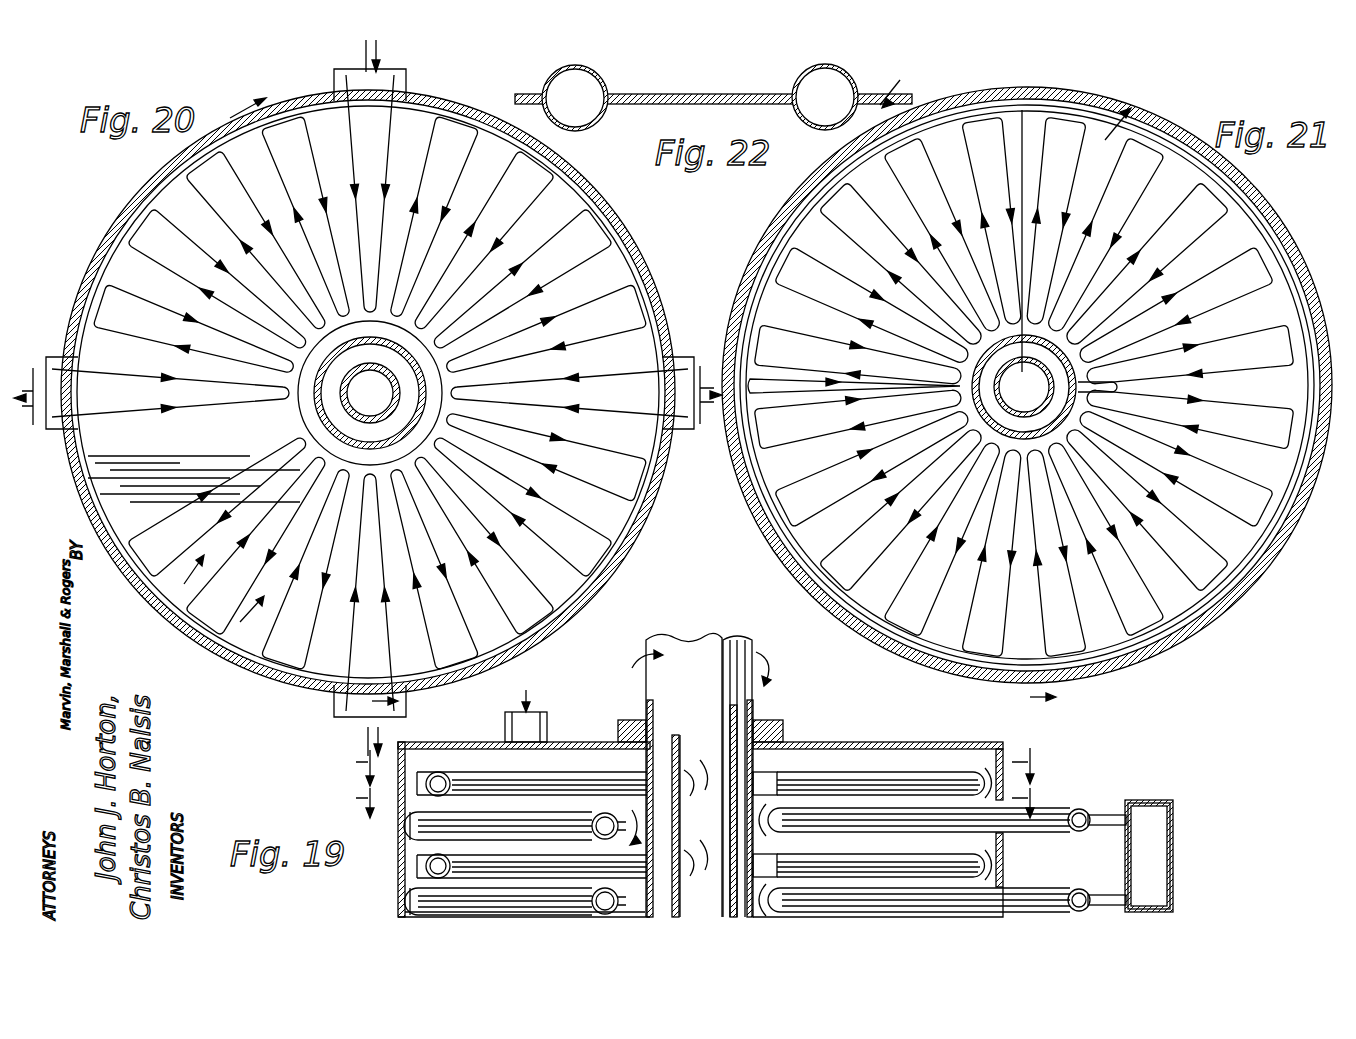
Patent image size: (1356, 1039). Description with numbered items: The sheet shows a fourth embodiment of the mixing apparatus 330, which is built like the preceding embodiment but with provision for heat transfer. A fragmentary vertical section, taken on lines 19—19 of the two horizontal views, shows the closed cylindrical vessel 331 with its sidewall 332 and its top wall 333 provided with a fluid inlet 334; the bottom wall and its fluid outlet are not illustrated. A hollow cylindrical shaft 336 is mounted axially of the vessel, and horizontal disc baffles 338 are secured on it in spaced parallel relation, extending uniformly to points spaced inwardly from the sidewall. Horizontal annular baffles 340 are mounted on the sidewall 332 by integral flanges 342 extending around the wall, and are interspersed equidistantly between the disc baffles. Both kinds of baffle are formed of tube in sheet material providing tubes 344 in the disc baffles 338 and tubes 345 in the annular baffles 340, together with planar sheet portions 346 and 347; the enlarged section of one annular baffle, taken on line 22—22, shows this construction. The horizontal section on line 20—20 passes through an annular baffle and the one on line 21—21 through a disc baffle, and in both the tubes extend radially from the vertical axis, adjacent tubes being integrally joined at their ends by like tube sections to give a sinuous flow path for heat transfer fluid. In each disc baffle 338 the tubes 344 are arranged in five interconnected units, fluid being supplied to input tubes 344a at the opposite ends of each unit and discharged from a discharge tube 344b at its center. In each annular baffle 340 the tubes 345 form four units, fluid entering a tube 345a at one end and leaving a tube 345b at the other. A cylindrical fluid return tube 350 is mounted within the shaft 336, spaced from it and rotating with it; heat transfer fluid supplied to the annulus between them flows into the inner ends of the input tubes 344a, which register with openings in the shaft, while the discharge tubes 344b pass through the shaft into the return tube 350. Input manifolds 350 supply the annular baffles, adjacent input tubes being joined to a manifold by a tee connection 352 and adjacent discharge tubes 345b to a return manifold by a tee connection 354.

In FIG. 20, the section line 19— 19 is at (314, 402).
In FIG. 22, the section line 19— 19 is at (879, 106).
In FIG. 21, the section line 19— 19 is at (1076, 408).
In FIG. 19, the section line 20— 20 is at (701, 803).
In FIG. 19, the section line 21— 21 is at (701, 767).
In FIG. 20, the section line 22— 22 is at (231, 578).
In FIG. 21, the mixing apparatus 330 is at (1238, 600).
In FIG. 19, the mixing apparatus 330 is at (1188, 826).
In FIG. 19, the closed cylindrical vessel 331 is at (400, 913).
In FIG. 20, the sidewall 332 is at (633, 534).
In FIG. 21, the sidewall 332 is at (772, 548).
In FIG. 19, the sidewall 332 is at (404, 880).
In FIG. 19, the top wall 333 is at (802, 742).
In FIG. 19, the fluid inlet 334 is at (546, 720).
In FIG. 20, the hollow cylindrical shaft 336 is at (418, 410).
In FIG. 21, the hollow cylindrical shaft 336 is at (995, 387).
In FIG. 19, the hollow cylindrical shaft 336 is at (757, 692).
In FIG. 21, the horizontal disc baffles 338 is at (1255, 216).
In FIG. 19, the horizontal disc baffles 338 is at (814, 778).
In FIG. 20, the horizontal annular baffles 340 is at (600, 189).
In FIG. 19, the horizontal annular baffles 340 is at (846, 822).
In FIG. 19, the integral flanges 342 is at (446, 900).
In FIG. 21, the tubes of disc baffles 344 is at (1102, 190).
In FIG. 19, the tubes of disc baffles 344 is at (580, 779).
In FIG. 21, the input tubes 344a is at (1120, 272).
In FIG. 19, the input tubes 344a is at (699, 848).
In FIG. 21, the discharge tube 344b is at (1115, 376).
In FIG. 19, the discharge tube 344b is at (699, 770).
In FIG. 20, the tubes of annular baffles 345 is at (306, 176).
In FIG. 22, the tubes of annular baffles 345 is at (600, 74).
In FIG. 19, the tubes of annular baffles 345 is at (514, 822).
In FIG. 20, the input tube of annular baffle 345a is at (392, 150).
In FIG. 19, the input tube of annular baffle 345a is at (1072, 830).
In FIG. 20, the discharge tube of annular baffle 345b is at (145, 380).
In FIG. 19, the sheet portions of disc baffles 346 is at (470, 776).
In FIG. 22, the sheet portions of annular baffles 347 is at (708, 94).
In FIG. 19, the sheet portions of annular baffles 347 is at (454, 822).
In FIG. 20, the fluid return tube 350 is at (354, 420).
In FIG. 21, the fluid return tube 350 is at (1080, 396).
In FIG. 19, the fluid return tube 350 is at (648, 714).
In FIG. 20, the tee connection 352 is at (402, 80).
In FIG. 19, the tee connection 352 is at (1074, 890).
In FIG. 20, the tee connection 354 is at (80, 412).